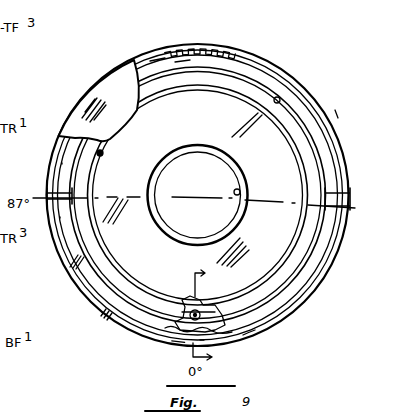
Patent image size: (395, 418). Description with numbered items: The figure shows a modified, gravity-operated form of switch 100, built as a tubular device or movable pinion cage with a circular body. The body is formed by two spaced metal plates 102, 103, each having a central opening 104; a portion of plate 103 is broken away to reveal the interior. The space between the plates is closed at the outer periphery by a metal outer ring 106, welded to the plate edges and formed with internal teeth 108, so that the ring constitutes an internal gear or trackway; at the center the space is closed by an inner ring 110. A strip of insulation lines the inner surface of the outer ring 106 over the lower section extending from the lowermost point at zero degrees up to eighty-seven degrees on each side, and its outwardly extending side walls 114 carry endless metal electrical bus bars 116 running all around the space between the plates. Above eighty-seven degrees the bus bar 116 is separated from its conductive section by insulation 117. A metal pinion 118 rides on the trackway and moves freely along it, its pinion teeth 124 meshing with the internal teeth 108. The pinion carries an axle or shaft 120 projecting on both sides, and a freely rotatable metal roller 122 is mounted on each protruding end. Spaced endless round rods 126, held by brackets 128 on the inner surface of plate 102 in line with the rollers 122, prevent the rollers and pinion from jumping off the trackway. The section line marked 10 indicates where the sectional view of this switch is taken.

The switch 100 is at (108, 59).
The metal plate 102 is at (117, 252).
The metal plate 103 is at (100, 90).
The central opening 104 is at (245, 192).
The outer ring 106 is at (262, 58).
The internal teeth 108 is at (187, 42).
The inner ring 110 is at (240, 173).
The side wall 114 is at (108, 292).
The bus bar 116 is at (280, 98).
The insulation 117 is at (68, 193).
The pinion 118 is at (203, 305).
The axle or shaft 120 is at (167, 337).
The roller 122 is at (242, 335).
The pinion teeth 124 is at (183, 307).
The round rod 126 is at (297, 245).
The bracket 128 is at (103, 153).
The section line 10- 10 is at (211, 316).